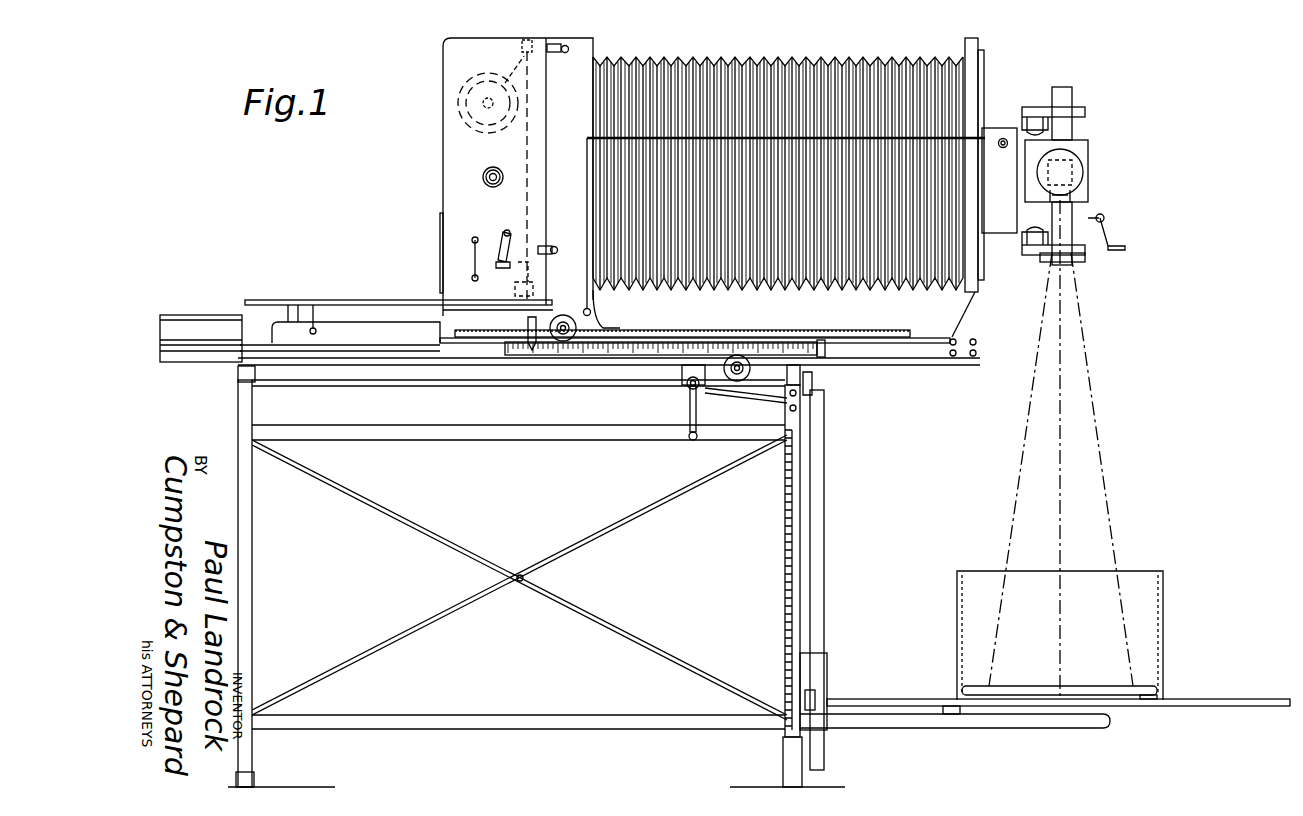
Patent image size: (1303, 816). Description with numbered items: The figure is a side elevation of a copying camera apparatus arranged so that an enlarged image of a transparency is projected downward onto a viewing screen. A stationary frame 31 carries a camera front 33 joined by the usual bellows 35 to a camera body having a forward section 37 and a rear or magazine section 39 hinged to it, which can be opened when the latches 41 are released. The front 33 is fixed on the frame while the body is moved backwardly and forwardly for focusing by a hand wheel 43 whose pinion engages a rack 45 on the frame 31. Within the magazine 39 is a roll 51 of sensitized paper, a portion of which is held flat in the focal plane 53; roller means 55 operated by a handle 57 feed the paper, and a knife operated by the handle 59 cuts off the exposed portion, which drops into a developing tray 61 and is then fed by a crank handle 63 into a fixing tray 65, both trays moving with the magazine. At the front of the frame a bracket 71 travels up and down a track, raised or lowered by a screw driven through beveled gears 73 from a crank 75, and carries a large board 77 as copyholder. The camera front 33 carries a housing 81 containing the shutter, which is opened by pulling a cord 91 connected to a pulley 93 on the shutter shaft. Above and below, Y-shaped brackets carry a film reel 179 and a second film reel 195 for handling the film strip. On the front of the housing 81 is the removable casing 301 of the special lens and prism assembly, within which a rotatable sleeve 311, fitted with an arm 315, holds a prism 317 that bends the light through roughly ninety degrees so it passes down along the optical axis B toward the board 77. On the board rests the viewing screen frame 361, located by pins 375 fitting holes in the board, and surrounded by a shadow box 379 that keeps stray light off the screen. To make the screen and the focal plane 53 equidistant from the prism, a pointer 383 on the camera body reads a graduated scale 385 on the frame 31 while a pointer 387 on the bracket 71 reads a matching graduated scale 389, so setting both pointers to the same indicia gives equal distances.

The stationary frame 31 is at (932, 354).
The camera front 33 is at (979, 53).
The bellows 35 is at (764, 58).
The forward section 37 is at (594, 53).
The magazine section 39 is at (443, 45).
The latches 41 is at (557, 54).
The hand wheel 43 is at (565, 315).
The rack 45 is at (717, 330).
The roll 51 is at (481, 115).
The focal plane 53 is at (527, 140).
The roller means 55 is at (515, 290).
The handle 57 is at (524, 260).
The knife handle 59 is at (472, 252).
The developing tray 61 is at (375, 306).
The crank handle 63 is at (318, 326).
The fixing tray 65 is at (190, 316).
The bracket 71 is at (972, 729).
The beveled gears 73 is at (813, 391).
The crank 75 is at (690, 402).
The board 77 is at (1214, 694).
The housing 81 is at (1010, 228).
The cord 91 is at (586, 160).
The pulley 93 is at (1003, 148).
The film reel 179 is at (1073, 101).
The film reel 195 is at (1040, 262).
The casing 301 is at (1076, 193).
The rotatable sleeve 311 is at (1109, 240).
The arm 315 is at (1083, 160).
The prism 317 is at (1076, 173).
The screen frame 361 is at (1090, 686).
The pins 375 is at (945, 704).
The shadow box 379 is at (1163, 602).
The pointer 383 is at (527, 331).
The graduated scale 385 is at (612, 358).
The pointer 387 is at (815, 738).
The graduated scale 389 is at (785, 582).
The optical axis B is at (1062, 442).